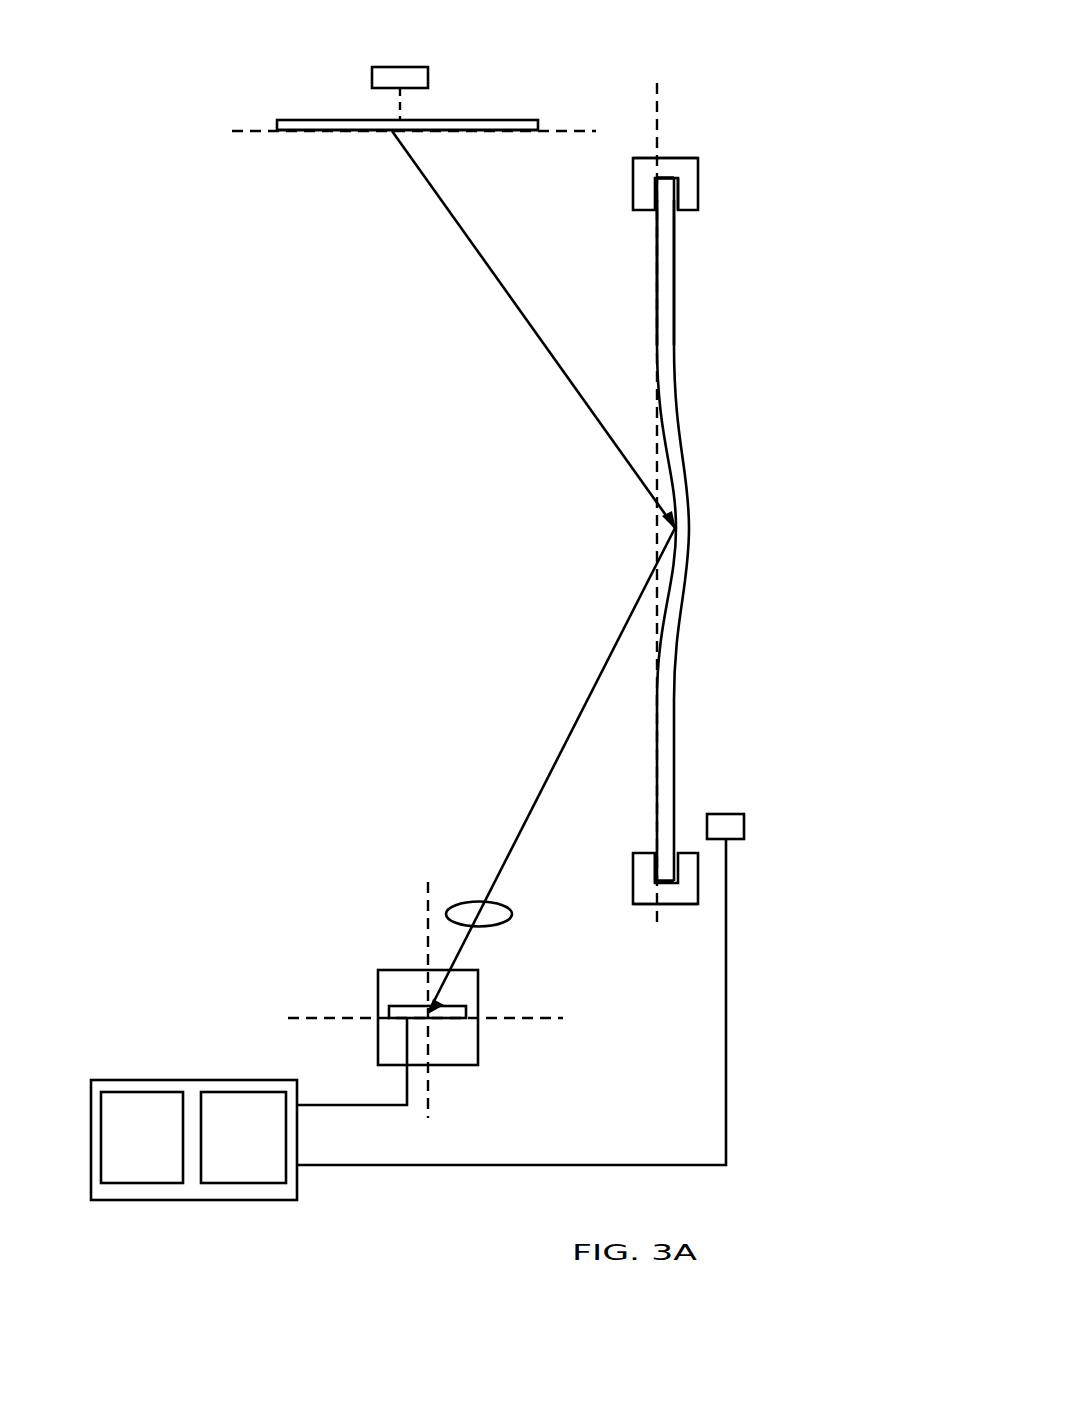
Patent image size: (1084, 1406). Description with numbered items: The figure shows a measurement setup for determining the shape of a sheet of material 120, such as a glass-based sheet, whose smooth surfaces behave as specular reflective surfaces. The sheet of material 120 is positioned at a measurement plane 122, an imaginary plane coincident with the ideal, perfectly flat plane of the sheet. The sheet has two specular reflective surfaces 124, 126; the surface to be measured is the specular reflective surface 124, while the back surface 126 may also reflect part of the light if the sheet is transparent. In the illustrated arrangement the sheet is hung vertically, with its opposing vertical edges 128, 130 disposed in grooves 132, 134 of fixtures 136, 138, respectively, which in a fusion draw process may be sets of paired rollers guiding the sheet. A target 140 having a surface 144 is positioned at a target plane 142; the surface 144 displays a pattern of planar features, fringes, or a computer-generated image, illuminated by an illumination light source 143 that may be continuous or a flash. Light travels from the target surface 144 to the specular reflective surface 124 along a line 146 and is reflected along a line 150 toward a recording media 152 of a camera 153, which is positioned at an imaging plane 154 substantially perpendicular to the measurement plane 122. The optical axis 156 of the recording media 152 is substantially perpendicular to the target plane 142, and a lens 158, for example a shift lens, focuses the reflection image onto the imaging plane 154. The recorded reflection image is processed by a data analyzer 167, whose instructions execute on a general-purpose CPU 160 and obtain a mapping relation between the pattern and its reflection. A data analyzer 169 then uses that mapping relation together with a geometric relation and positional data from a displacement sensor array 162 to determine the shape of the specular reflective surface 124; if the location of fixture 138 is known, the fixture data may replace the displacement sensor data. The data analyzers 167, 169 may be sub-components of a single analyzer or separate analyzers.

The sheet of material 120 is at (667, 271).
The measurement plane 122 is at (656, 105).
The specular reflective surface 124 is at (655, 303).
The back surface 126 is at (675, 330).
The vertical edge 128 is at (665, 178).
The vertical edge 130 is at (665, 883).
The groove 132 is at (677, 193).
The groove 134 is at (642, 895).
The fixture 136 is at (663, 163).
The fixture 138 is at (655, 870).
The target 140 is at (493, 118).
The target plane 142 is at (252, 131).
The illumination light source 143 is at (399, 65).
The surface of the target 144 is at (343, 131).
The line 146 is at (481, 254).
The line 150 is at (591, 692).
The recording media 152 is at (405, 1011).
The camera 153 is at (460, 1067).
The imaging plane 154 is at (323, 1017).
The optical axis 156 is at (425, 900).
The lens 158 is at (470, 903).
The CPU 160 is at (190, 1080).
The displacement sensor array 162 is at (726, 813).
The data analyzer 167 is at (145, 1152).
The data analyzer 169 is at (237, 1150).